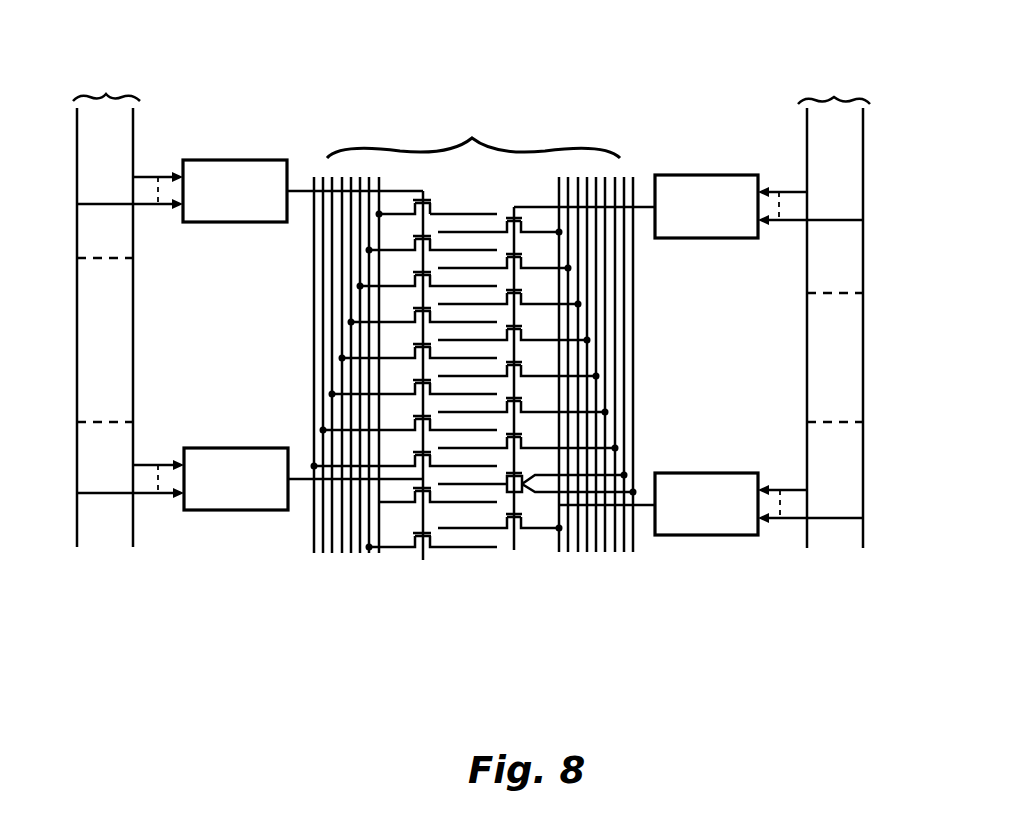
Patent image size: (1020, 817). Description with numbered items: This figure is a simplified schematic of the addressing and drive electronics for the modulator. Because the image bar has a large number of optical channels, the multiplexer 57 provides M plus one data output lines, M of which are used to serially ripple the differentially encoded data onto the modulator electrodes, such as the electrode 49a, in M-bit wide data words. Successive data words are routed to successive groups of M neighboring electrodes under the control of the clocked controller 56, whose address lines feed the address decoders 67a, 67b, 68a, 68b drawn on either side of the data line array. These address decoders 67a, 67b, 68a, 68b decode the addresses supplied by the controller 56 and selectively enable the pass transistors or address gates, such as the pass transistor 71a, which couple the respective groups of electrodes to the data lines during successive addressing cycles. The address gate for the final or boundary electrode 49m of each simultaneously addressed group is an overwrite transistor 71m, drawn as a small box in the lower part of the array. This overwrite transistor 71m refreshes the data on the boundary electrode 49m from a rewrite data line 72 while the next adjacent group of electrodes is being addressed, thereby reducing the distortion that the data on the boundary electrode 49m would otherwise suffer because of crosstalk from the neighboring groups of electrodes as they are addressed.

The controller 56 is at (467, 280).
The multiplexer 57 is at (497, 354).
The address decoder 67a is at (237, 222).
The address decoder 67b is at (710, 238).
The address decoder 68a is at (237, 510).
The address decoder 68b is at (712, 535).
The pass transistor 71a is at (428, 197).
The overwrite transistor 71m is at (503, 495).
The electrode 49a is at (477, 212).
The boundary electrode 49m is at (458, 485).
The rewrite data line 72 is at (632, 390).